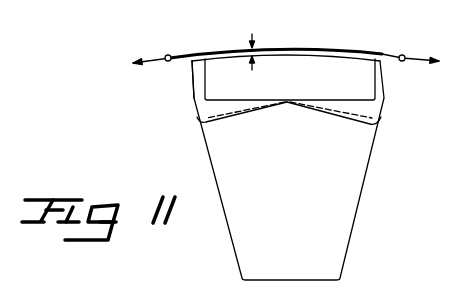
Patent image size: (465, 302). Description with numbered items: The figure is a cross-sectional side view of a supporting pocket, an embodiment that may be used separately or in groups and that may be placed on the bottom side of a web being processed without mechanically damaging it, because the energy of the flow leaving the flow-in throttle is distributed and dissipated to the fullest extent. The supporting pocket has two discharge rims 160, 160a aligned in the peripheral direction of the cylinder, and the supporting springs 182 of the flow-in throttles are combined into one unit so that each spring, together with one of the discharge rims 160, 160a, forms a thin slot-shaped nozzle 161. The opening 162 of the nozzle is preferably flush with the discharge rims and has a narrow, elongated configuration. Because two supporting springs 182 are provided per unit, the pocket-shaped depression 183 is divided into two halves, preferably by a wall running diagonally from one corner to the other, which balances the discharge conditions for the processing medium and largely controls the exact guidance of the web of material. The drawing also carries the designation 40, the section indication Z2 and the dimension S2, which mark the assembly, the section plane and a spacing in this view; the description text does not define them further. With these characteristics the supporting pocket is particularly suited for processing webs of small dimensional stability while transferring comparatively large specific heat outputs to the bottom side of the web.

The container assembly 40 is at (383, 54).
The discharge rim 160 is at (387, 78).
The discharge rim 160a is at (192, 77).
The slot-shaped nozzle 161 is at (200, 96).
The opening of the nozzle 162 is at (197, 61).
The supporting spring 182 is at (205, 88).
The pocket-shaped depression 183 is at (337, 60).
The spacing dimension S2 is at (258, 45).
The section line Z2 is at (287, 52).